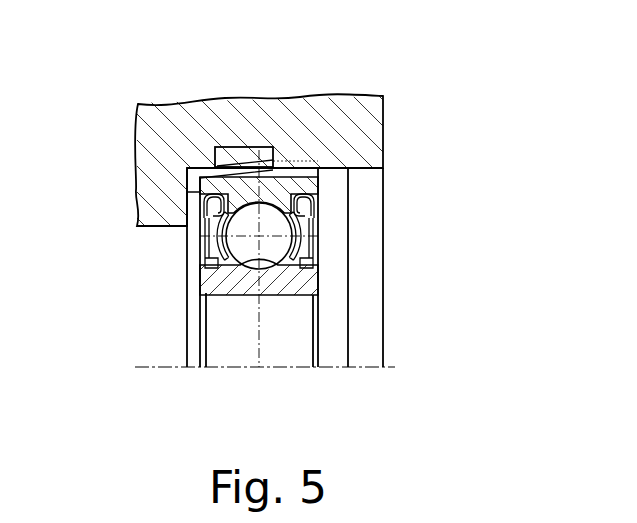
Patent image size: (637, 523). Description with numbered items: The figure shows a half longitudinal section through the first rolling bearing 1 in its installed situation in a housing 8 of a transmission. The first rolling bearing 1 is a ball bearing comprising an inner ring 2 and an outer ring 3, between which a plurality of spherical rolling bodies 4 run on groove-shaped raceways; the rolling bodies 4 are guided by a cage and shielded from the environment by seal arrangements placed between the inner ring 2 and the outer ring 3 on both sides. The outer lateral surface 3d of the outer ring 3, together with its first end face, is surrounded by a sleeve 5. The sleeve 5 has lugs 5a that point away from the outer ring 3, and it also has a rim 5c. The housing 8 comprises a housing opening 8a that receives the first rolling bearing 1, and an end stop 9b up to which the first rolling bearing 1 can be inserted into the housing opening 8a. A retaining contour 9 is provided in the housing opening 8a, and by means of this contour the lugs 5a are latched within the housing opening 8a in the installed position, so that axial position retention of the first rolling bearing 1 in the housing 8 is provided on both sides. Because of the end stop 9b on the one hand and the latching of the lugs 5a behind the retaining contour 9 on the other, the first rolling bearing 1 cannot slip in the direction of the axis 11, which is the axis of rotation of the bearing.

The first rolling bearing 1 is at (186, 252).
The inner ring 2 is at (300, 287).
The outer ring 3 is at (272, 188).
The outer lateral surface 3d is at (290, 168).
The spherical rolling bodies 4 is at (273, 247).
The sleeve 5 is at (187, 313).
The lugs 5a is at (268, 146).
The rim 5c is at (183, 183).
The housing 8 is at (283, 100).
The housing opening 8a is at (348, 168).
The retaining contour 9 is at (220, 146).
The end stop 9b is at (187, 212).
The axis 11 is at (360, 368).